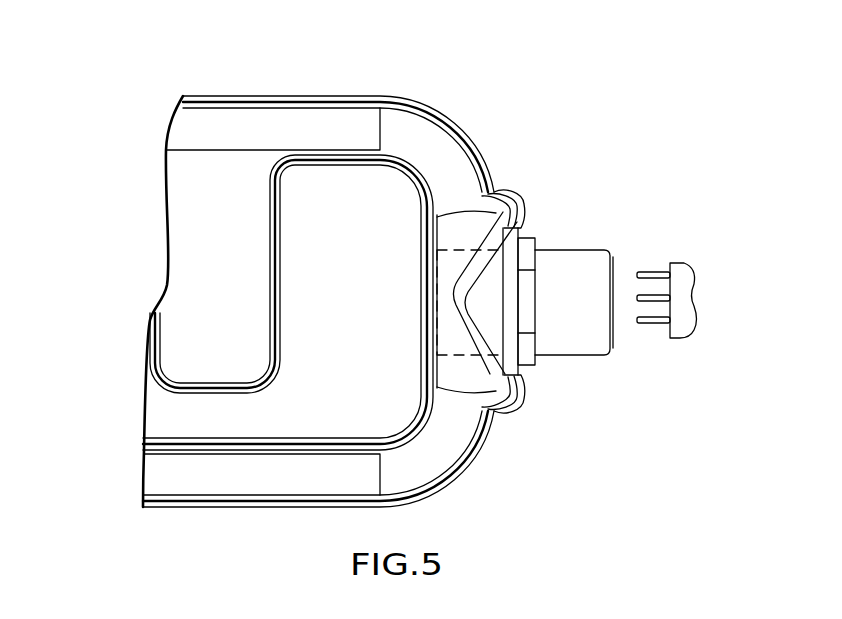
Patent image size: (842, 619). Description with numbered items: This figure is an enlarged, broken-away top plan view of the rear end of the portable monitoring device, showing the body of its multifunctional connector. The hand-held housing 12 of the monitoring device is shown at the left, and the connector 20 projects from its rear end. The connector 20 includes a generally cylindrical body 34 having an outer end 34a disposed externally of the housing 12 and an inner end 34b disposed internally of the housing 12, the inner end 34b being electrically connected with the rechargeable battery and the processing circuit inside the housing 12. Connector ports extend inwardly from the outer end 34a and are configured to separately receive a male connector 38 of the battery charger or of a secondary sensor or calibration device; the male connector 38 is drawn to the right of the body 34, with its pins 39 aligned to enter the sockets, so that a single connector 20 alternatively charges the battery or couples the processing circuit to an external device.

The housing 12 is at (358, 97).
The connector 20 is at (583, 414).
The cylindrical body 34 is at (589, 281).
The outer end 34a is at (610, 355).
The inner end 34b is at (433, 343).
The male connector 38 is at (667, 312).
The pins 39 is at (650, 272).